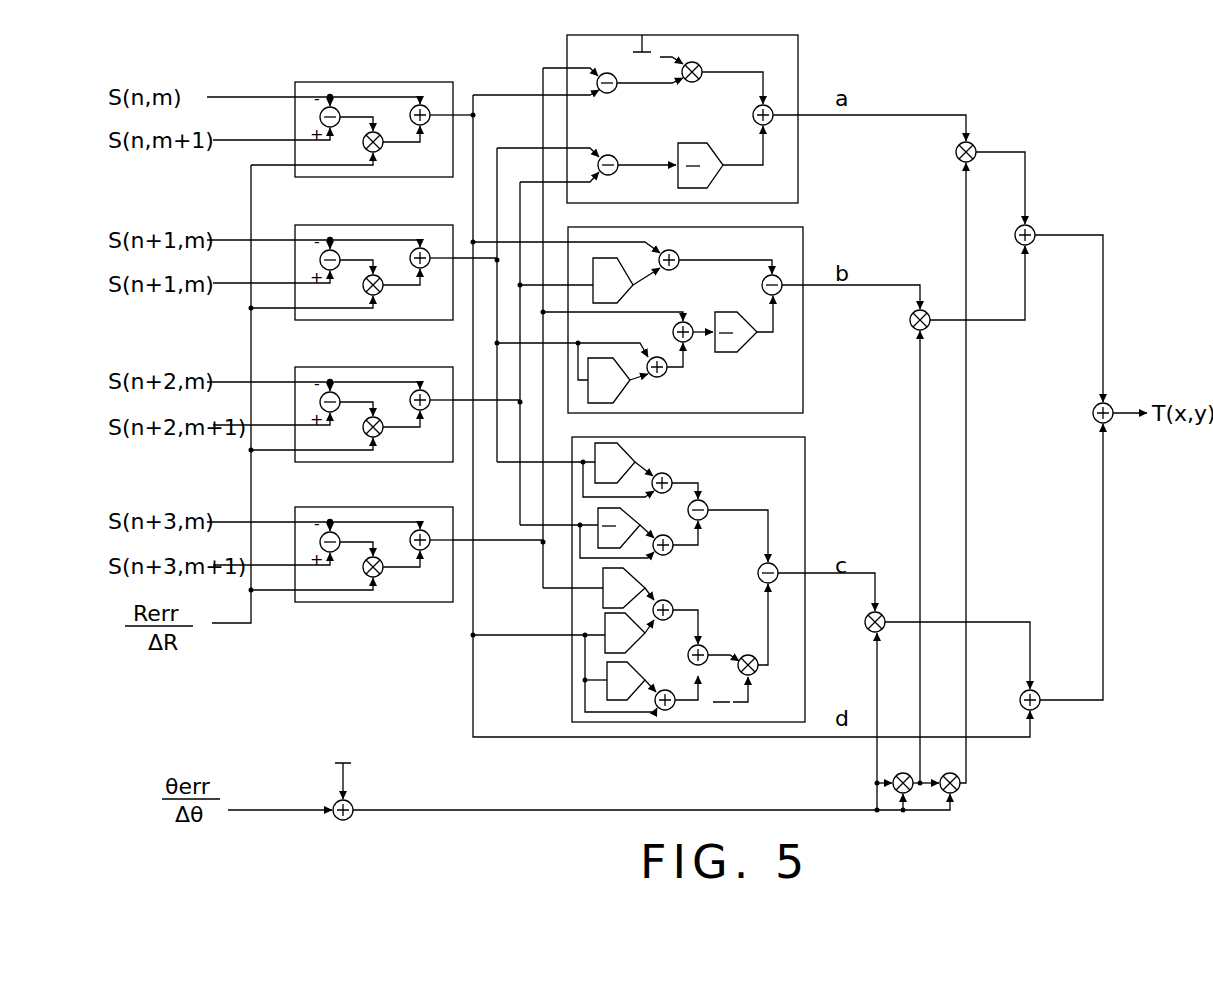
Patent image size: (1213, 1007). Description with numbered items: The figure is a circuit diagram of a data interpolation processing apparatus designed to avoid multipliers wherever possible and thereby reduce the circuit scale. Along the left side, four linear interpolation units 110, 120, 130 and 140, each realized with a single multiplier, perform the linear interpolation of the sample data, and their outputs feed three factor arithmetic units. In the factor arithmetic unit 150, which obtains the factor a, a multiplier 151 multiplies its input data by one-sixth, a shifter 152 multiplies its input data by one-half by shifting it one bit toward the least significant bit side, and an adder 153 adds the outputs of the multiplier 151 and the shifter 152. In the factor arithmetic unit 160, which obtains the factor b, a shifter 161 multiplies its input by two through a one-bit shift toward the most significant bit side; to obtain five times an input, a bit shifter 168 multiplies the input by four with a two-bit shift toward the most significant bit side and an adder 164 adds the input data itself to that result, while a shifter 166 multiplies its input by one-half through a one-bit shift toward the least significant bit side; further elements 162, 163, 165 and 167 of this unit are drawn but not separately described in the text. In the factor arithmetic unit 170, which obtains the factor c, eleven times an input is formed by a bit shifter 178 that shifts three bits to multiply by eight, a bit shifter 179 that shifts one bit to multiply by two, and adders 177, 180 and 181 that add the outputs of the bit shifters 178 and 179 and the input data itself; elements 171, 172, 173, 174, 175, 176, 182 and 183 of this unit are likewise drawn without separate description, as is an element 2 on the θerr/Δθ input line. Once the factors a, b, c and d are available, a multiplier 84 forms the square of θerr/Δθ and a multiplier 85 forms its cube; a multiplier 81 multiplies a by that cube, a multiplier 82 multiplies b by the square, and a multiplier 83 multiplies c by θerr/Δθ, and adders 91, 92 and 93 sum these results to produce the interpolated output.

The adder 2 is at (355, 801).
The multiplier 81 is at (974, 146).
The multiplier 82 is at (928, 312).
The multiplier 83 is at (883, 614).
The multiplier 84 is at (903, 770).
The multiplier 85 is at (950, 770).
The adder 91 is at (1035, 228).
The adder 92 is at (1040, 692).
The adder 93 is at (1110, 406).
The linear interpolation unit 110 is at (445, 84).
The linear interpolation unit 120 is at (452, 208).
The linear interpolation unit 130 is at (452, 349).
The linear interpolation unit 140 is at (452, 489).
The factor arithmetic unit 150 is at (669, 119).
The multiplier 151 is at (702, 66).
The shifter 152 is at (718, 132).
The adder 153 is at (757, 107).
The factor arithmetic unit 160 is at (673, 316).
The shifter 161 is at (626, 292).
The adder 162 is at (680, 250).
The adder input line 163 is at (648, 357).
The adder 164 is at (665, 375).
The adder 165 is at (692, 320).
The shifter 166 is at (742, 350).
The subtractor 167 is at (782, 288).
The bit shifter 168 is at (622, 388).
The factor arithmetic unit 170 is at (673, 610).
The doubler 171 is at (635, 450).
The adder 172 is at (672, 478).
The 1/2 multiplier 173 is at (630, 512).
The adder 174 is at (673, 552).
The subtractor 175 is at (708, 506).
The doubler 176 is at (632, 574).
The adder 177 is at (674, 604).
The bit shifter 178 is at (603, 622).
The bit shifter 179 is at (642, 660).
The adder 180 is at (667, 711).
The adder 181 is at (709, 648).
The multiplier 182 is at (754, 674).
The subtractor 183 is at (778, 562).